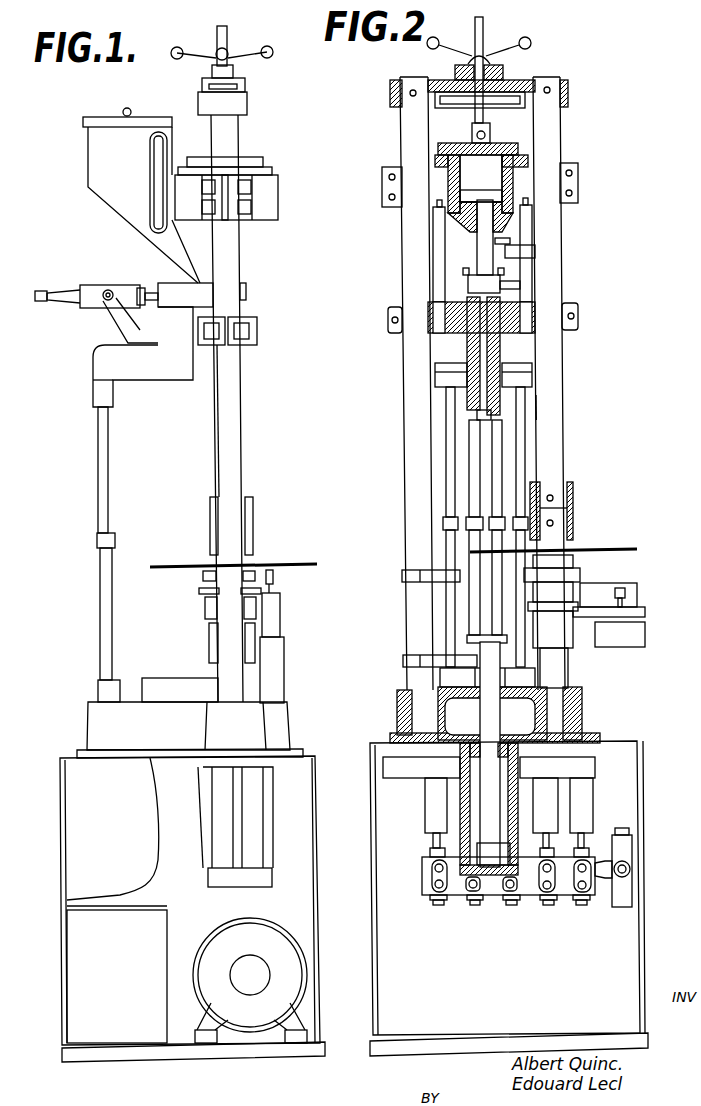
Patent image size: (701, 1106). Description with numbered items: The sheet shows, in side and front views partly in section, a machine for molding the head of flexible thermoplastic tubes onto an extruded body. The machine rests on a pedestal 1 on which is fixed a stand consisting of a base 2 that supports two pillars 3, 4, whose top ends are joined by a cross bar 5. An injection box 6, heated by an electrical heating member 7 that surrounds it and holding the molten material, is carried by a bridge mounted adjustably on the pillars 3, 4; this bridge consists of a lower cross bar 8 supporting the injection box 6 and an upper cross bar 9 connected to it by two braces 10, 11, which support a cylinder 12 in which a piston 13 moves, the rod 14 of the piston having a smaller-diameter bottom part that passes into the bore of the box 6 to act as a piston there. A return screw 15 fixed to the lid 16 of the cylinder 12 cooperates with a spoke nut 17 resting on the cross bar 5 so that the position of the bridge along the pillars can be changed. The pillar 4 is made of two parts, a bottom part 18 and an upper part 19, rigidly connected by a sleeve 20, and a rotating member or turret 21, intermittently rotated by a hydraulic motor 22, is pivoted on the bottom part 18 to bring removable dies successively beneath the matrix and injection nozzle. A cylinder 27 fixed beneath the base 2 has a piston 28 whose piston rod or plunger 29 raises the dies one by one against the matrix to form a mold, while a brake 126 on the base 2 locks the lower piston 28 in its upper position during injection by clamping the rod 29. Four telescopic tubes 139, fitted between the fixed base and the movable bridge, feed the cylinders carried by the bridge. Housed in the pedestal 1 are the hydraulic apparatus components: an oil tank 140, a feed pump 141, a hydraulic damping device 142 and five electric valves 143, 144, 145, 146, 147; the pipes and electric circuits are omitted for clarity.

In FIG. 1, the pedestal 1 is at (325, 886).
In FIG. 1, the base 2 is at (345, 736).
In FIG. 2, the pillar 3 is at (413, 500).
In FIG. 2, the pillar 4 is at (556, 468).
In FIG. 1, the cross bar 5 is at (204, 109).
In FIG. 2, the cross bar 5 is at (568, 85).
In FIG. 2, the injection box 6 is at (500, 350).
In FIG. 2, the electrical heating member 7 is at (467, 348).
In FIG. 1, the lower cross bar 8 is at (257, 331).
In FIG. 2, the lower cross bar 8 is at (578, 306).
In FIG. 1, the upper cross bar 9 is at (260, 220).
In FIG. 2, the upper cross bar 9 is at (580, 187).
In FIG. 2, the brace 10 is at (437, 232).
In FIG. 2, the brace 11 is at (526, 230).
In FIG. 2, the cylinder 12 is at (433, 160).
In FIG. 2, the piston 13 is at (496, 198).
In FIG. 2, the rod 14 is at (486, 253).
In FIG. 2, the return screw 15 is at (478, 101).
In FIG. 2, the lid 16 is at (447, 147).
In FIG. 2, the spoke nut 17 is at (489, 51).
In FIG. 2, the bottom part 18 is at (568, 668).
In FIG. 2, the upper part 19 is at (556, 407).
In FIG. 2, the sleeve 20 is at (573, 508).
In FIG. 1, the rotating member 21 is at (297, 566).
In FIG. 2, the rotating member 21 is at (596, 554).
In FIG. 2, the hydraulic motor 22 is at (642, 634).
In FIG. 1, the cylinder 27 is at (255, 822).
In FIG. 2, the piston 28 is at (480, 856).
In FIG. 2, the piston rod 29 is at (492, 718).
In FIG. 2, the brake 126 is at (440, 680).
In FIG. 2, the telescopic tubes 139 is at (470, 443).
In FIG. 1, the oil tank 140 is at (117, 974).
In FIG. 1, the feed pump 141 is at (250, 980).
In FIG. 2, the hydraulic damping device 142 is at (620, 903).
In FIG. 2, the electric valve 143 is at (432, 905).
In FIG. 2, the electric valve 144 is at (472, 905).
In FIG. 2, the electric valve 145 is at (507, 905).
In FIG. 2, the electric valve 146 is at (548, 905).
In FIG. 2, the electric valve 147 is at (582, 906).